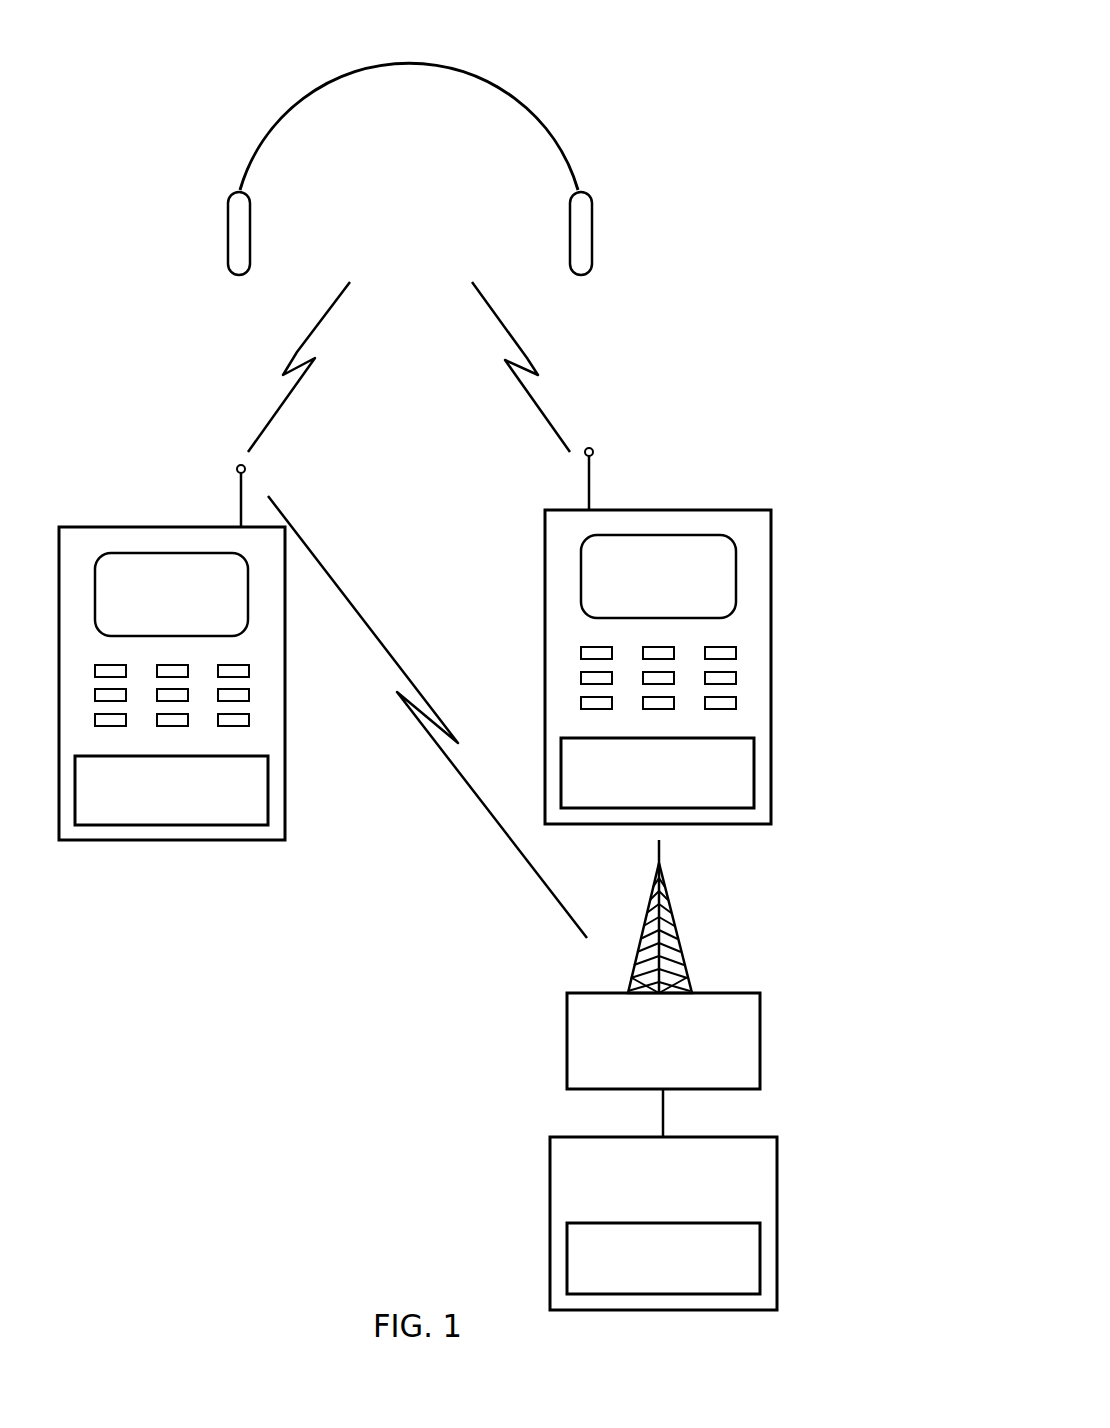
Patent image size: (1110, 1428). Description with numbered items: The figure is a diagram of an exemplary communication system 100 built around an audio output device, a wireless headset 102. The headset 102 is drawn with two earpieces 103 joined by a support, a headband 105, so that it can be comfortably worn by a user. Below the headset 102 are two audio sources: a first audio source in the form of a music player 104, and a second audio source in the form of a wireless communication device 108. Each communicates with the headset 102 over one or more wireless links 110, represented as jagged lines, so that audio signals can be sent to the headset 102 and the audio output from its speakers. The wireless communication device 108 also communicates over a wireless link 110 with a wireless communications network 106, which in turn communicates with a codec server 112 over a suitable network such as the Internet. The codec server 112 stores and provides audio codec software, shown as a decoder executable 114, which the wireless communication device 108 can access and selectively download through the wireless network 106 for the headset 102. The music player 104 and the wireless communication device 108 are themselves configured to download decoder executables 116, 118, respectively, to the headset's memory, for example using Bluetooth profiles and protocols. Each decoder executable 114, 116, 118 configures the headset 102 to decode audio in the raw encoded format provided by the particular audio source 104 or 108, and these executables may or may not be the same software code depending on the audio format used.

The communication system 100 is at (752, 36).
The wireless headset 102 is at (594, 152).
The earpieces 103 is at (229, 215).
The music player 104 is at (712, 510).
The headband 105 is at (313, 88).
The wireless communications network 106 is at (739, 993).
The wireless communication device 108 is at (118, 527).
The wireless links 110 is at (297, 351).
The codec server 112 is at (758, 1137).
The decoder executable 114 is at (761, 1264).
The decoder executable 116 is at (269, 792).
The decoder executable 118 is at (755, 777).